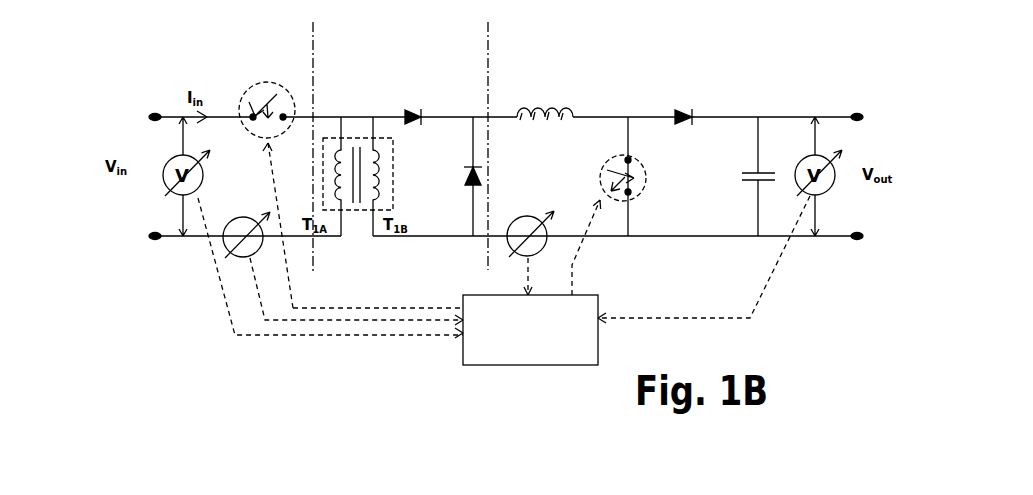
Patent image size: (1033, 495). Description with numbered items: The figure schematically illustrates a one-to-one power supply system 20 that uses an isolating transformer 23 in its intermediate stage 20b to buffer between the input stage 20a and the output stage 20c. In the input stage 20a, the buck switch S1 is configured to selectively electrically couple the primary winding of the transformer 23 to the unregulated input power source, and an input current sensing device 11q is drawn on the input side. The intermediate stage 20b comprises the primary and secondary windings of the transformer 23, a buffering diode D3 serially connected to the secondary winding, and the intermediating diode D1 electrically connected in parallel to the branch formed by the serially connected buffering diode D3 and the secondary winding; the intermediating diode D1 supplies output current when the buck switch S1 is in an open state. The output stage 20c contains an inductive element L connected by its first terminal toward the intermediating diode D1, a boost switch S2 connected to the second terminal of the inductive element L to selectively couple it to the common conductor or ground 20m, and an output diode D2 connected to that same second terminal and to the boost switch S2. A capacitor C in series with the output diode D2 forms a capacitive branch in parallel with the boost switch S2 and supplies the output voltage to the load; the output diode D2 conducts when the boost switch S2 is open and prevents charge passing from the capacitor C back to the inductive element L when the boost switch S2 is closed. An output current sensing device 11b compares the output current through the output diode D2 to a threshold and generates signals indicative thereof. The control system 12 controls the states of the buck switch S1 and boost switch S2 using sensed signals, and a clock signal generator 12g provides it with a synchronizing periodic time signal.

The power supply system 20 is at (168, 61).
The input stage 20a is at (267, 46).
The intermediate stage 20b is at (430, 46).
The output stage 20c is at (737, 49).
The common conductor/ground 20m is at (607, 236).
The isolating transformer 23 is at (357, 138).
The input current sensing device 11q is at (247, 216).
The output current sensing device 11b is at (527, 216).
The control system 12 is at (463, 352).
The clock signal generator 12g is at (534, 373).
The buck switch S1 is at (260, 103).
The boost switch S2 is at (610, 176).
The intermediating diode D1 is at (458, 176).
The output diode D2 is at (685, 104).
The buffering diode D3 is at (424, 104).
The inductive element L is at (545, 102).
The capacitor C is at (755, 176).